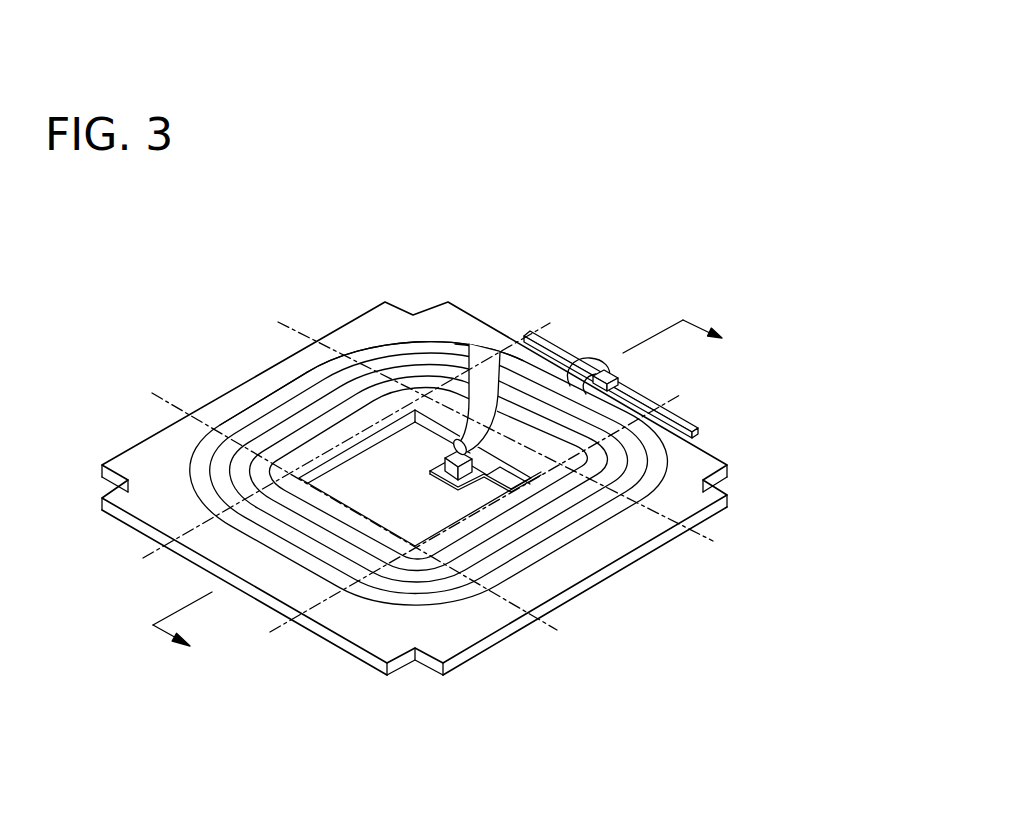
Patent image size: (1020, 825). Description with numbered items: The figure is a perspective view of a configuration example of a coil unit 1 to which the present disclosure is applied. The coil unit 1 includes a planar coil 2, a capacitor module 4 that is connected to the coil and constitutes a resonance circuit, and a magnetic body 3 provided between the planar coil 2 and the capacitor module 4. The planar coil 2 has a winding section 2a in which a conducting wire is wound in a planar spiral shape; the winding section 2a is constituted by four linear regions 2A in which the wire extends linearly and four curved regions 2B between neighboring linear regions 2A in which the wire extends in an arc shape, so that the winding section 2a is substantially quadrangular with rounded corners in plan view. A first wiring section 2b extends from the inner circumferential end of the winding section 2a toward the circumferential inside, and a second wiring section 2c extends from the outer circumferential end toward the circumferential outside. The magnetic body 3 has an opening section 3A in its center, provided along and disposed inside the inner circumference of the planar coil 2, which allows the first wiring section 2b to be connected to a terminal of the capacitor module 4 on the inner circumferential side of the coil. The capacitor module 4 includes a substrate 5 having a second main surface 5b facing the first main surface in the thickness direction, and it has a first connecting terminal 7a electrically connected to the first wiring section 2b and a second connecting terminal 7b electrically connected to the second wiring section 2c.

The coil unit 1 is at (197, 233).
The planar coil 2 is at (273, 567).
The linear region 2A is at (283, 392).
The curved region 2B is at (427, 342).
The winding section 2a is at (470, 372).
The first wiring section 2b is at (491, 418).
The second wiring section 2c is at (598, 362).
The magnetic body 3 is at (621, 581).
The opening section 3A is at (348, 456).
The capacitor module 4 is at (693, 405).
The substrate 5 is at (652, 340).
The second main surface 5b is at (548, 350).
The first connecting terminal 7a is at (451, 472).
The second connecting terminal 7b is at (612, 386).